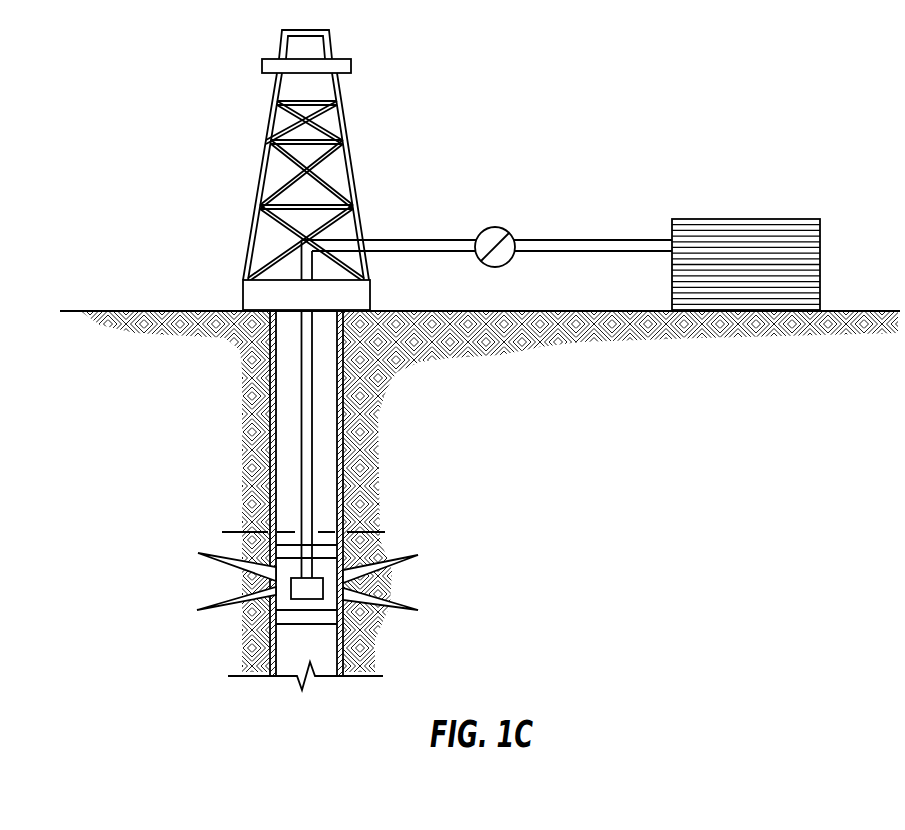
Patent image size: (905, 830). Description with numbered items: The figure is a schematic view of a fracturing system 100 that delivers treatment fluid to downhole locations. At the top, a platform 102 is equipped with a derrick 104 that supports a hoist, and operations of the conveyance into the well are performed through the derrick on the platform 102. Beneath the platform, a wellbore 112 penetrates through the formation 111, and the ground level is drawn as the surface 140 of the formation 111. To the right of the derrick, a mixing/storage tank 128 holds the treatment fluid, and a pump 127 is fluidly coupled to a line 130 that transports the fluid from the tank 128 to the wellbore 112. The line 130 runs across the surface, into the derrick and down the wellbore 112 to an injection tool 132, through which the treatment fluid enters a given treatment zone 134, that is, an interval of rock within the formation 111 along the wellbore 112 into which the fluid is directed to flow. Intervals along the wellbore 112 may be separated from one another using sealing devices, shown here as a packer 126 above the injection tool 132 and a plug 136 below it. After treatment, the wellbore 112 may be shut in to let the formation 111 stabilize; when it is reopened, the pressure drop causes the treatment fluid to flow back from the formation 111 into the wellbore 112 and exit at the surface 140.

The fracturing system 100 is at (143, 48).
The platform 102 is at (248, 298).
The derrick 104 is at (345, 117).
The formation 111 is at (578, 393).
The wellbore 112 is at (284, 416).
The packer 126 is at (330, 553).
The pump 127 is at (495, 227).
The mixing/storage tank 128 is at (788, 219).
The line 130 is at (410, 240).
The injection tool 132 is at (293, 589).
The treatment zone 134 is at (233, 532).
The plug 136 is at (330, 615).
The surface 140 is at (422, 310).